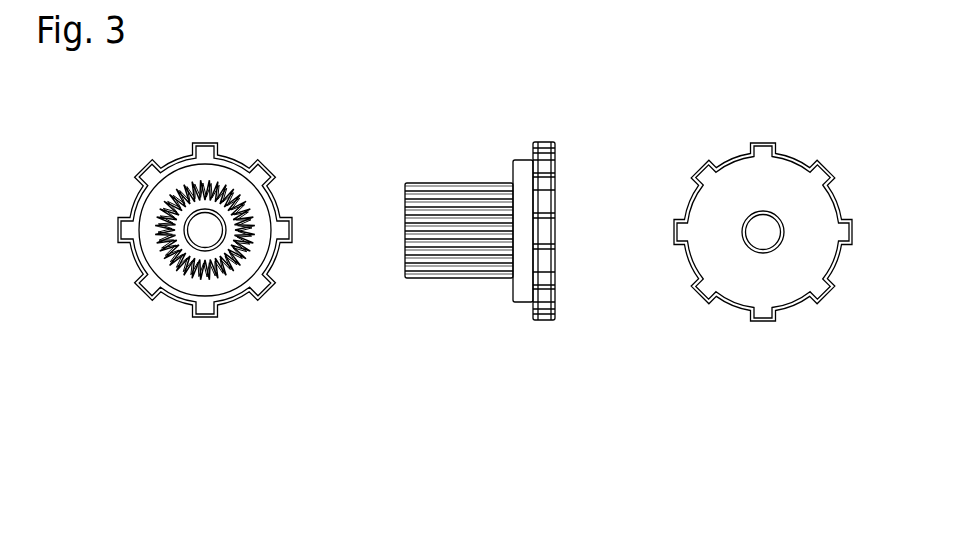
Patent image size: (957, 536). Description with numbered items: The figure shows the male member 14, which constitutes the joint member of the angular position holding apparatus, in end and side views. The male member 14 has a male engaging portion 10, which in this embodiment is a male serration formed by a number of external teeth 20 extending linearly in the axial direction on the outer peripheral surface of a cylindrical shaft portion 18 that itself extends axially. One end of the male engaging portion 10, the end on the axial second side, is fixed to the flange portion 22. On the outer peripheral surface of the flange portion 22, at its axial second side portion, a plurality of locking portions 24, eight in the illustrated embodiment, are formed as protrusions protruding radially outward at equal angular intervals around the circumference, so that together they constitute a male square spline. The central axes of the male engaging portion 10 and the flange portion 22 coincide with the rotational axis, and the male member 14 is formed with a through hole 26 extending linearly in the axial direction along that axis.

The male engaging portion 10 is at (222, 178).
The male member 14 is at (492, 40).
The cylindrical shaft portion 18 is at (180, 218).
The external teeth 20 is at (187, 183).
The flange portion 22 is at (180, 309).
The locking portions 24 is at (142, 297).
The through hole 26 is at (195, 240).